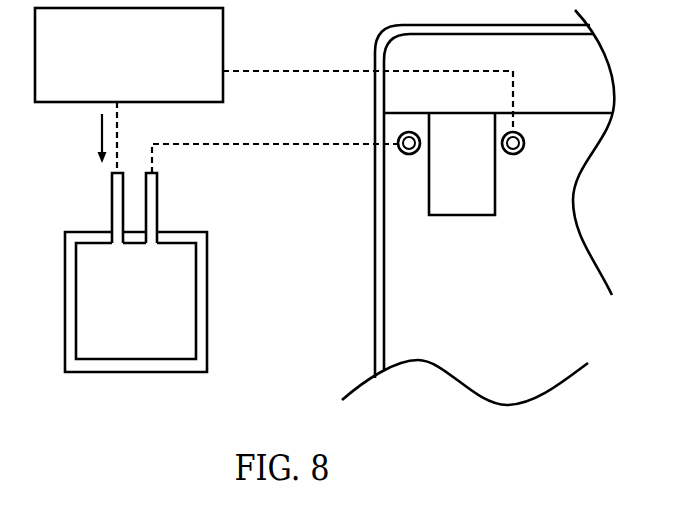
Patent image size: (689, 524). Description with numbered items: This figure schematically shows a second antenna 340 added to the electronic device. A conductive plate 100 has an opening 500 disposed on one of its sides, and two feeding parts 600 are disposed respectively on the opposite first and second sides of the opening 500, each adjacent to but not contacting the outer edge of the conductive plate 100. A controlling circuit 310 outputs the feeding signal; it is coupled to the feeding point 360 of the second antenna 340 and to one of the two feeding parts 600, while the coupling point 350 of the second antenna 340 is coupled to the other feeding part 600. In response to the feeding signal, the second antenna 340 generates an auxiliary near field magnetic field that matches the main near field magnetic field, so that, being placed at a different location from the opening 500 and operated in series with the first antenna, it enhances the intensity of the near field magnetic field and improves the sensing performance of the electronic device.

The conductive plate 100 is at (412, 325).
The controlling circuit 310 is at (112, 82).
The second antenna 340 is at (208, 282).
The coupling point 350 is at (156, 186).
The feeding point 360 is at (113, 186).
The opening 500 is at (460, 207).
The feeding parts 600 is at (409, 155).